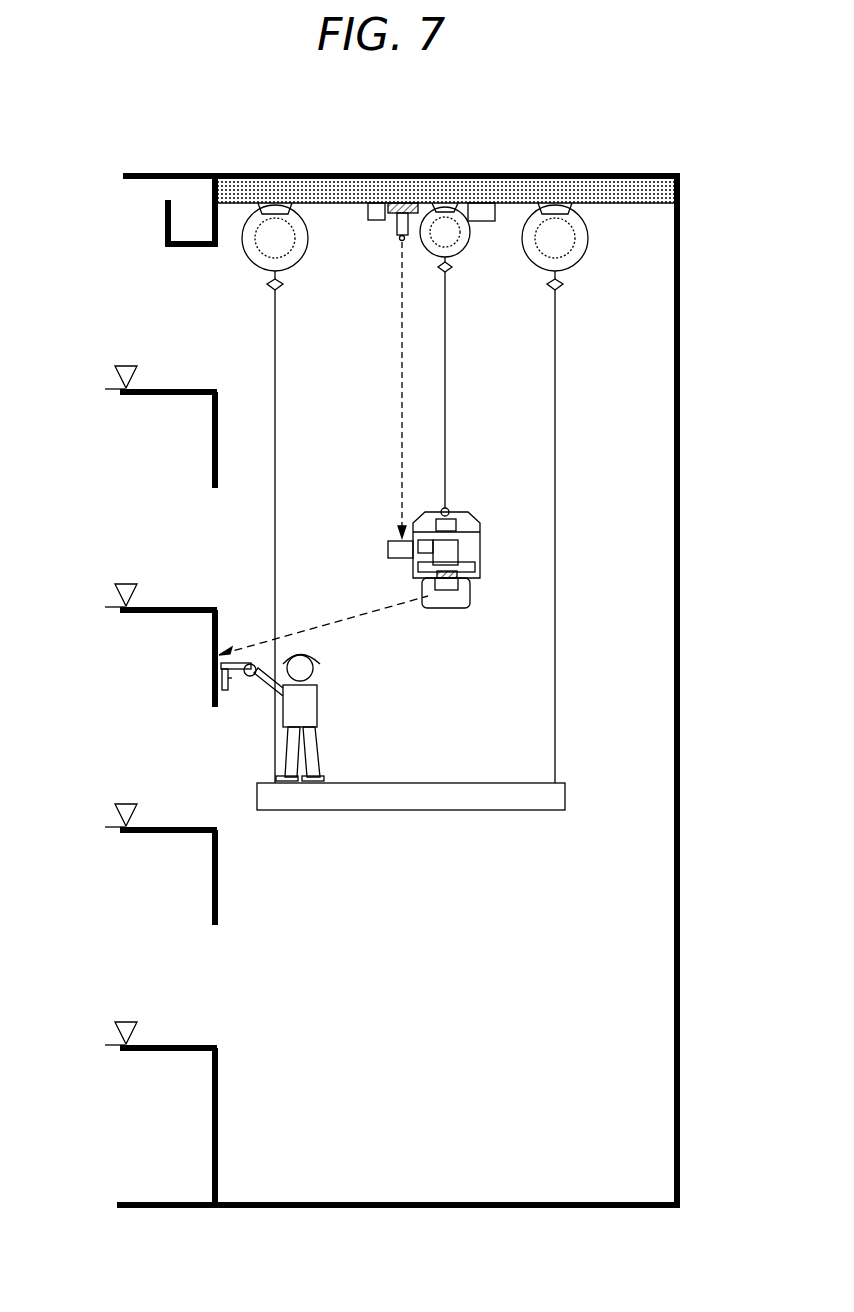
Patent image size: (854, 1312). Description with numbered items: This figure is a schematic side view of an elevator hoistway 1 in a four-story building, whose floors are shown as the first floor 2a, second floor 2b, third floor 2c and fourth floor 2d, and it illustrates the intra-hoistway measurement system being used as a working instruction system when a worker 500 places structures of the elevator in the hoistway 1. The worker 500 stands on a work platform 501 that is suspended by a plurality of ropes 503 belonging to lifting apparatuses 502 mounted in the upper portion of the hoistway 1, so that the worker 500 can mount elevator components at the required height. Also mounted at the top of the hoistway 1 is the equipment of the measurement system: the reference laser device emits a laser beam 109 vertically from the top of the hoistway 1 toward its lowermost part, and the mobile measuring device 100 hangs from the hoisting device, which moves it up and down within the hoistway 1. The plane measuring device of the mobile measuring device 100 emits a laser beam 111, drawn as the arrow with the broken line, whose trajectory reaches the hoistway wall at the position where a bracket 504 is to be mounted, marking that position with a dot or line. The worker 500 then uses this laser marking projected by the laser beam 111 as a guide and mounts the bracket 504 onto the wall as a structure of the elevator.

The elevator hoistway 1 is at (655, 1089).
The first floor 2a is at (121, 1036).
The second floor 2b is at (121, 818).
The third floor 2c is at (121, 598).
The fourth floor 2d is at (121, 380).
The mobile measuring device 100 is at (449, 620).
The laser beam 109 is at (402, 332).
The laser beam 111 is at (372, 610).
The worker 500 is at (318, 705).
The work platform 501 is at (455, 805).
The lifting apparatus 502 is at (303, 228).
The rope 503 is at (274, 545).
The bracket 504 is at (212, 683).